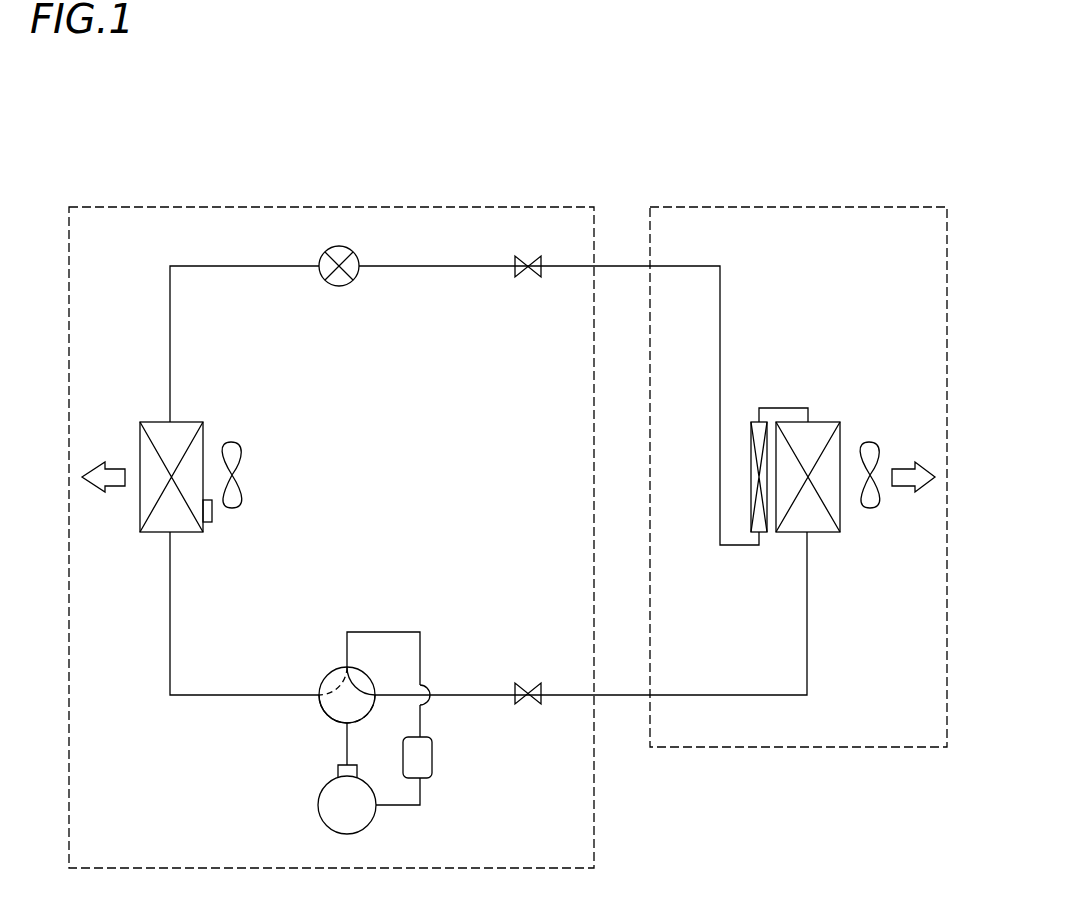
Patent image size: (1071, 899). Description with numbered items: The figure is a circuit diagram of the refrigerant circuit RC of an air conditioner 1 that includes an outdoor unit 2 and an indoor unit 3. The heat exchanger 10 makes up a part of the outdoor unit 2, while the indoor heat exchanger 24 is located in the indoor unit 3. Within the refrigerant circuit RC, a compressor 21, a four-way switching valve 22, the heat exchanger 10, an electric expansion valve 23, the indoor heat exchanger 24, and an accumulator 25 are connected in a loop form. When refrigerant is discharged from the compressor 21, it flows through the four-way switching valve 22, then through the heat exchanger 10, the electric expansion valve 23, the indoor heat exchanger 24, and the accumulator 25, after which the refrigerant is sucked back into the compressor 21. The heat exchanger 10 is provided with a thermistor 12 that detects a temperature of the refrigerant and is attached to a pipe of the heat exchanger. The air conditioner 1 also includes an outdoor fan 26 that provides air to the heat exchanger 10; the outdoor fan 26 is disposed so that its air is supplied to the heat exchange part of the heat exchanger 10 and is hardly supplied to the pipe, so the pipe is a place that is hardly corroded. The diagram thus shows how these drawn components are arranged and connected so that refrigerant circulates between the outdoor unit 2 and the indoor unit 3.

The air conditioner 1 is at (638, 144).
The outdoor unit 2 is at (356, 208).
The indoor unit 3 is at (803, 208).
The heat exchanger 10 is at (200, 421).
The thermistor 12 is at (207, 522).
The compressor 21 is at (318, 805).
The four-way switching valve 22 is at (326, 680).
The electric expansion valve 23 is at (339, 287).
The indoor heat exchanger 24 is at (818, 420).
The accumulator 25 is at (435, 757).
The outdoor fan 26 is at (242, 474).
The refrigerant circuit RC is at (748, 696).